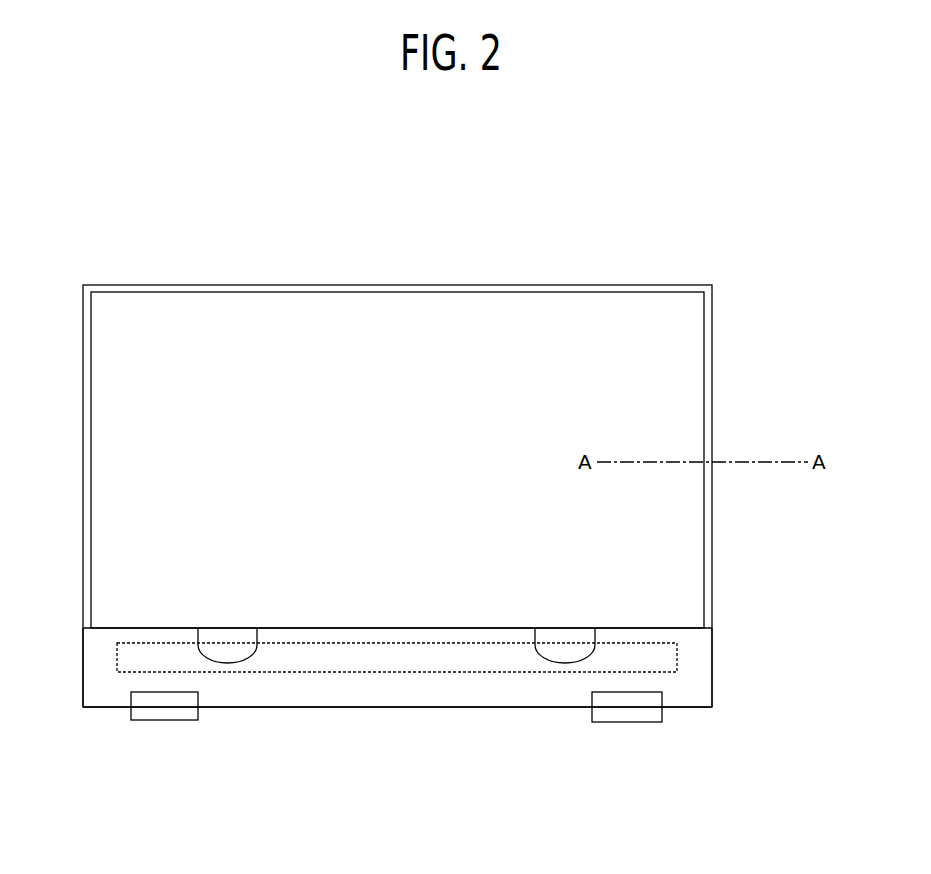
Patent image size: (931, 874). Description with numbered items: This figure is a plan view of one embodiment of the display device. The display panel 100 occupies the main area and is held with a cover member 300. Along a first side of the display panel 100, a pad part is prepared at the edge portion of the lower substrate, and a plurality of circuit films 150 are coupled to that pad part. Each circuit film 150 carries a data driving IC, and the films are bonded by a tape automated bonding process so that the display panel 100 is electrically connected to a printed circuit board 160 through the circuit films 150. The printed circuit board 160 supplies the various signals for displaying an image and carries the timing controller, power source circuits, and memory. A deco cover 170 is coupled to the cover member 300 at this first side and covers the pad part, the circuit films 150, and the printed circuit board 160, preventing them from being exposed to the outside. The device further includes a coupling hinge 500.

The display panel 100 is at (560, 292).
The cover member 300 is at (712, 322).
The deco cover 170 is at (712, 667).
The circuit films 150 is at (243, 643).
The printed circuit board 160 is at (363, 660).
The coupling hinge 500 is at (165, 712).